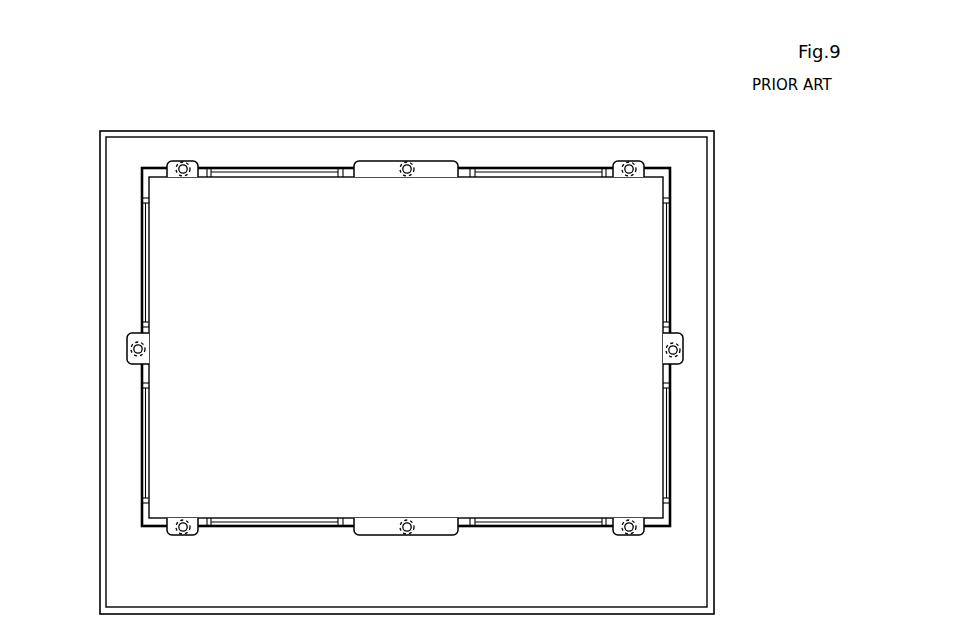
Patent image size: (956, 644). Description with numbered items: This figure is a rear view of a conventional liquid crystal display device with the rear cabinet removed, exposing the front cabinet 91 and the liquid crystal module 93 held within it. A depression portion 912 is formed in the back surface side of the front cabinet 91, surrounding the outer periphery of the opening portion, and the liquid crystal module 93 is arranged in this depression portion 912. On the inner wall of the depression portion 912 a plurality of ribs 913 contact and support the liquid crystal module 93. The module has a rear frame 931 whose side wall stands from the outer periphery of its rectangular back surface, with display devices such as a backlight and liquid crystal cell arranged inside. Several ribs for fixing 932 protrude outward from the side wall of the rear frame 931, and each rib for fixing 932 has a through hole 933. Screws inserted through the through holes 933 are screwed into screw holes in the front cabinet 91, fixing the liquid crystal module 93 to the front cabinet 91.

The front cabinet 91 is at (120, 163).
The depression portion 912 is at (142, 232).
The ribs 913 is at (145, 197).
The liquid crystal module 93 is at (355, 303).
The rear frame 931 is at (230, 418).
The rib for fixing 932 is at (172, 161).
The through hole 933 is at (187, 160).